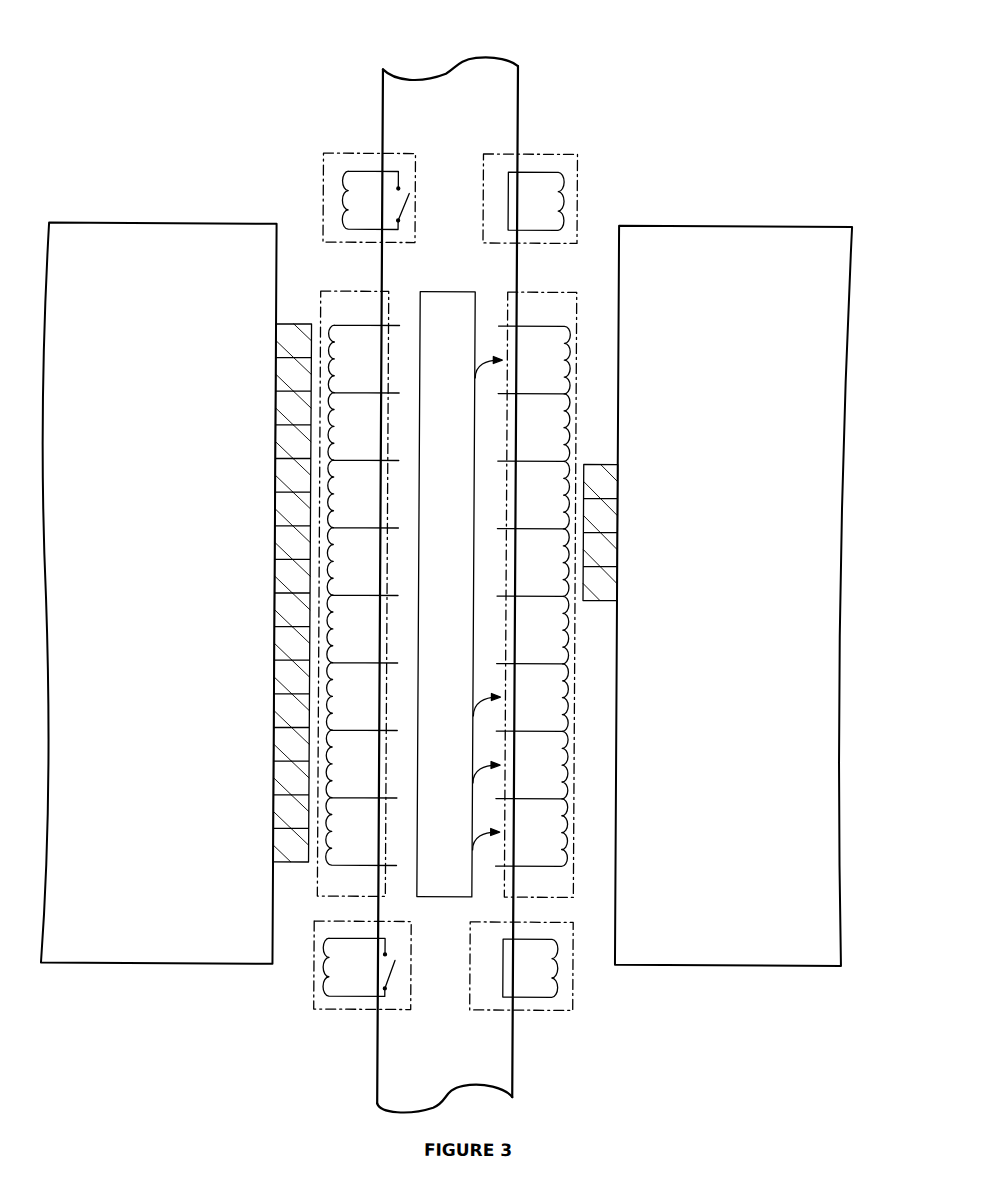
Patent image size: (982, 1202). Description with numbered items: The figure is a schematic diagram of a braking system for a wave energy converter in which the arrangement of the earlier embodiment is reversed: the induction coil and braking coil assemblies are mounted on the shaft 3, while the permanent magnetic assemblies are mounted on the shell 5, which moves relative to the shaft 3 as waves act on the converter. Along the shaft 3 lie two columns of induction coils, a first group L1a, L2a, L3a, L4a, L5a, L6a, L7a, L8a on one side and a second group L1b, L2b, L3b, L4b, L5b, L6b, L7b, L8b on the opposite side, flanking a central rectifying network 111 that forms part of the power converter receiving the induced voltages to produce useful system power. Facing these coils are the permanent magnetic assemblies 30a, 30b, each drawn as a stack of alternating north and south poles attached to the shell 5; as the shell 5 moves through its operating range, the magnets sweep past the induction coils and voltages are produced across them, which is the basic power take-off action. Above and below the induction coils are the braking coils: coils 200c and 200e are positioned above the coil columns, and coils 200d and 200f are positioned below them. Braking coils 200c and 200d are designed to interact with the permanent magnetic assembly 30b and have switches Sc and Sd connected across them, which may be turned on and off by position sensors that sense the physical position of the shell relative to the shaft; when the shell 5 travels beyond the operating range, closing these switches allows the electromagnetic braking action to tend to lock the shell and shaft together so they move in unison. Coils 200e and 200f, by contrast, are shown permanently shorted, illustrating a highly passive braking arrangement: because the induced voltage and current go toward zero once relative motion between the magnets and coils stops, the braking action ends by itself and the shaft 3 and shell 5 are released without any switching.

The shaft 3 is at (477, 58).
The shell 5 is at (656, 225).
The permanent magnetic assembly 30a is at (601, 466).
The permanent magnetic assembly 30b is at (293, 325).
The rectifying network 111 is at (434, 292).
The braking coil 200c is at (358, 153).
The braking coil 200d is at (356, 1011).
The braking coil 200e is at (556, 154).
The braking coil 200f is at (538, 1011).
The switch Sc is at (421, 200).
The switch Sd is at (410, 969).
The induction coil L1a is at (363, 359).
The induction coil L2a is at (363, 427).
The induction coil L3a is at (363, 494).
The induction coil L4a is at (362, 562).
The induction coil L5a is at (362, 629).
The induction coil L6a is at (361, 697).
The induction coil L7a is at (361, 764).
The induction coil L8a is at (361, 832).
The induction coil L1b is at (522, 360).
The induction coil L2b is at (534, 428).
The induction coil L3b is at (533, 495).
The induction coil L4b is at (533, 563).
The induction coil L5b is at (533, 630).
The induction coil L6b is at (520, 697).
The induction coil L7b is at (520, 765).
The induction coil L8b is at (520, 832).